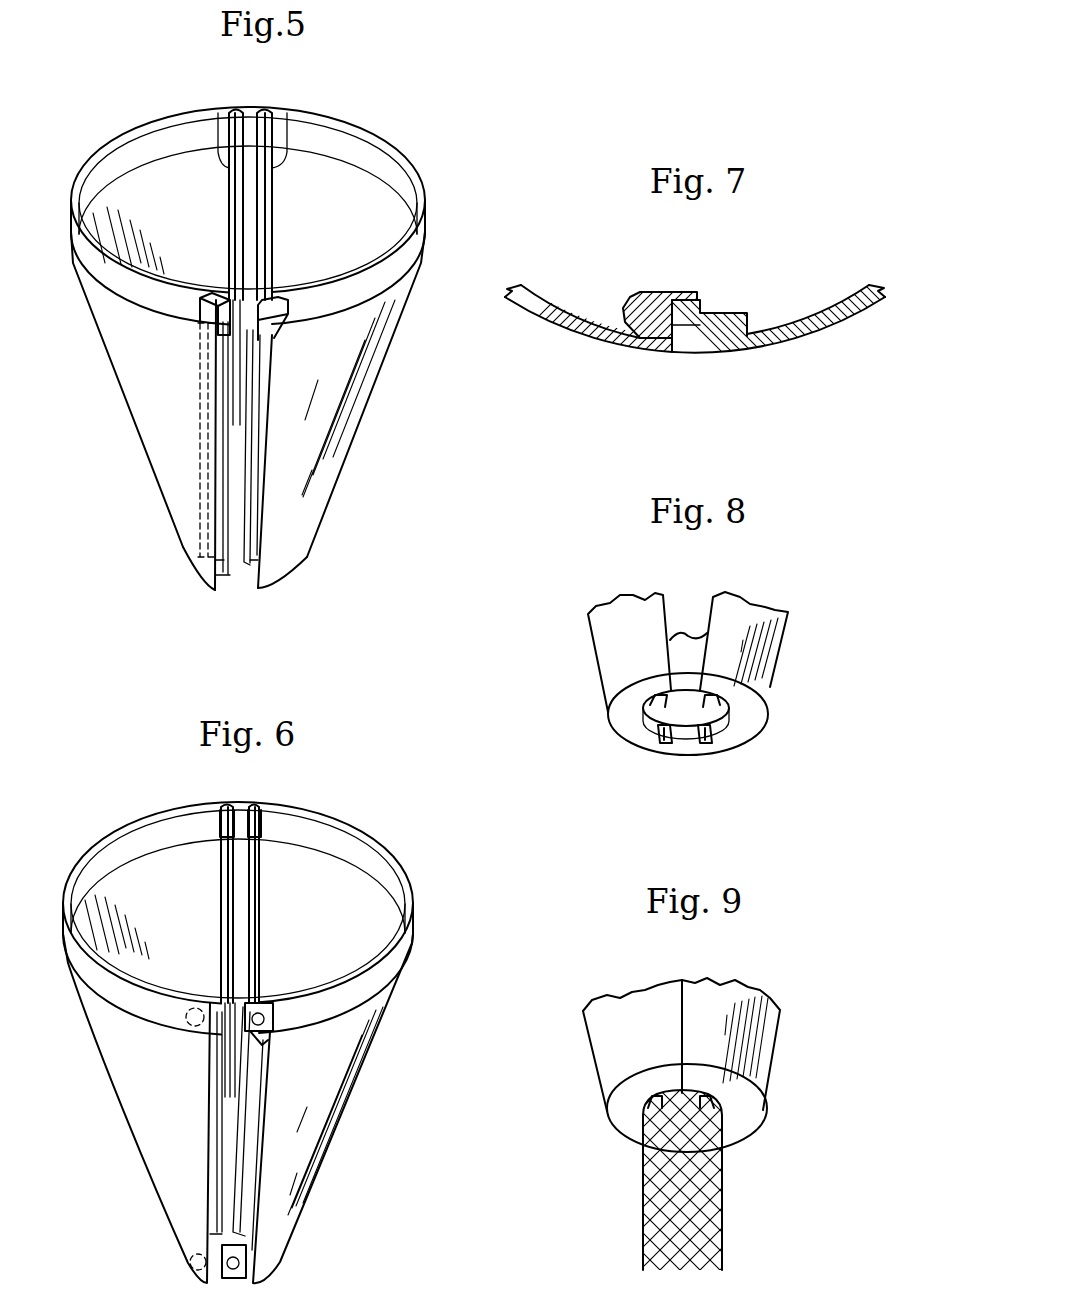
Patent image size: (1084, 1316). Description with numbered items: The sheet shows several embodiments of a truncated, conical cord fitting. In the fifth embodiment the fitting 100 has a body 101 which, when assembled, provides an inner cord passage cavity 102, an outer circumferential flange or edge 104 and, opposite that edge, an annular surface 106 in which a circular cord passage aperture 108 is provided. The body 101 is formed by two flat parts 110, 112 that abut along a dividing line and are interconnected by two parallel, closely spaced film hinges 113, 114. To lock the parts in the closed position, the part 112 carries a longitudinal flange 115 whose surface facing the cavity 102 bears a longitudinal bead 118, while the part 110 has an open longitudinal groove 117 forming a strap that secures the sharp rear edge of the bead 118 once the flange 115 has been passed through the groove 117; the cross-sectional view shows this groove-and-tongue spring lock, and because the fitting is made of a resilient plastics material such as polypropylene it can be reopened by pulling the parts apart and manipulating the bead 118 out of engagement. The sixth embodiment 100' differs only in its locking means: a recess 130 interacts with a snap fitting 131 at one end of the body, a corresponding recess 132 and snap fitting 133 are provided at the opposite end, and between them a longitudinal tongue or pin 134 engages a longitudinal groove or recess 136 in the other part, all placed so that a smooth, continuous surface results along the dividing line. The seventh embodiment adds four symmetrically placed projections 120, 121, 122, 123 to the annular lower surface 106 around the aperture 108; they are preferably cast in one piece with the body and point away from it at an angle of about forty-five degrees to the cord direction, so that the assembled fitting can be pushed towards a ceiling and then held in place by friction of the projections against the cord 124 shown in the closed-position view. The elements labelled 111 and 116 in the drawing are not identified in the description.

In FIG. 5, the fitting 100 is at (312, 200).
In FIG. 6, the fitting 100' is at (266, 889).
In FIG. 5, the body 101 is at (316, 412).
In FIG. 5, the inner cord passage cavity 102 is at (175, 183).
In FIG. 5, the outer circumferential flange or edge 104 is at (420, 213).
In FIG. 5, the annular surface 106 is at (197, 567).
In FIG. 8, the annular surface 106 is at (628, 698).
In FIG. 9, the annular surface 106 is at (737, 1130).
In FIG. 5, the circular cord passage aperture 108 is at (236, 573).
In FIG. 8, the circular cord passage aperture 108 is at (747, 737).
In FIG. 5, the flat part 110 is at (150, 410).
In FIG. 7, the flat part 110 is at (591, 333).
In FIG. 8, the flat part 110 is at (625, 623).
In FIG. 9, the flat part 110 is at (637, 1003).
In FIG. 5, the inner ring surface 111 is at (342, 182).
In FIG. 5, the flat part 112 is at (374, 343).
In FIG. 7, the flat part 112 is at (823, 328).
In FIG. 8, the flat part 112 is at (757, 620).
In FIG. 9, the flat part 112 is at (767, 1003).
In FIG. 5, the film hinge 113 is at (222, 112).
In FIG. 5, the film hinge 114 is at (288, 112).
In FIG. 5, the longitudinal flange 115 is at (253, 478).
In FIG. 7, the longitudinal flange 115 is at (688, 333).
In FIG. 5, the flange 116 is at (223, 467).
In FIG. 5, the longitudinal groove 117 is at (213, 293).
In FIG. 7, the longitudinal groove 117 is at (688, 300).
In FIG. 5, the longitudinal bead 118 is at (270, 300).
In FIG. 7, the longitudinal bead 118 is at (626, 303).
In FIG. 8, the projection 120 is at (710, 748).
In FIG. 8, the projection 121 is at (657, 745).
In FIG. 8, the projection 122 is at (647, 707).
In FIG. 9, the projection 122 is at (607, 1108).
In FIG. 8, the projection 123 is at (740, 698).
In FIG. 9, the projection 123 is at (760, 1097).
In FIG. 9, the cord 124 is at (653, 1210).
In FIG. 6, the recess 130 is at (187, 1013).
In FIG. 6, the snap fitting 131 is at (273, 1022).
In FIG. 6, the recess 132 is at (193, 1267).
In FIG. 6, the snap fitting 133 is at (250, 1267).
In FIG. 6, the longitudinal tongue or pin 134 is at (247, 1147).
In FIG. 6, the longitudinal groove or recess 136 is at (217, 1147).